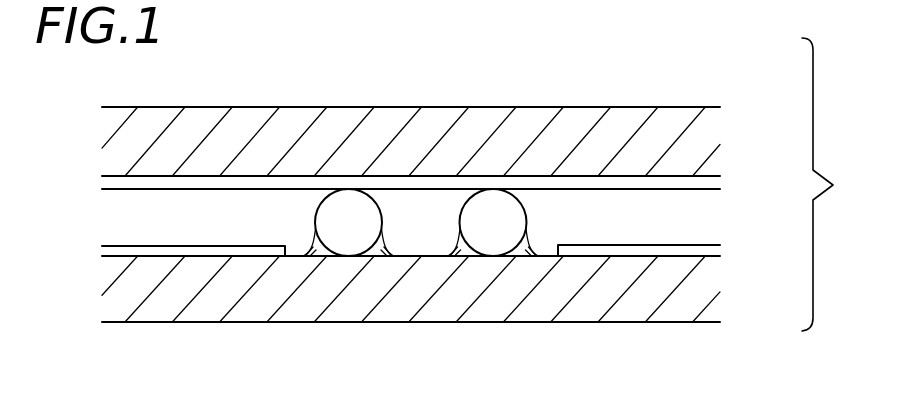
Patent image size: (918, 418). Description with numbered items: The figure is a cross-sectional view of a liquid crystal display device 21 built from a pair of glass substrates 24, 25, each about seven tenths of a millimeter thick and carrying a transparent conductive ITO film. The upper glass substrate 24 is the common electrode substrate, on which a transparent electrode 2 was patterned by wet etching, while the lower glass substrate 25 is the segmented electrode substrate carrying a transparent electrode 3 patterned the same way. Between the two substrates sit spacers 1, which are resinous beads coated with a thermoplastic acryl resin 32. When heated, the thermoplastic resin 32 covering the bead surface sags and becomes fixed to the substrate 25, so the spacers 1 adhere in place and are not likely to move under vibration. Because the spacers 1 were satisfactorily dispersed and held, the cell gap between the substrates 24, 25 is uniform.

The spacer 1 is at (494, 232).
The transparent electrode 2 is at (705, 182).
The transparent electrode 3 is at (695, 248).
The liquid crystal display device 21 is at (834, 184).
The glass substrate 24 is at (682, 115).
The glass substrate 25 is at (693, 298).
The thermoplastic acryl resin 32 is at (375, 252).